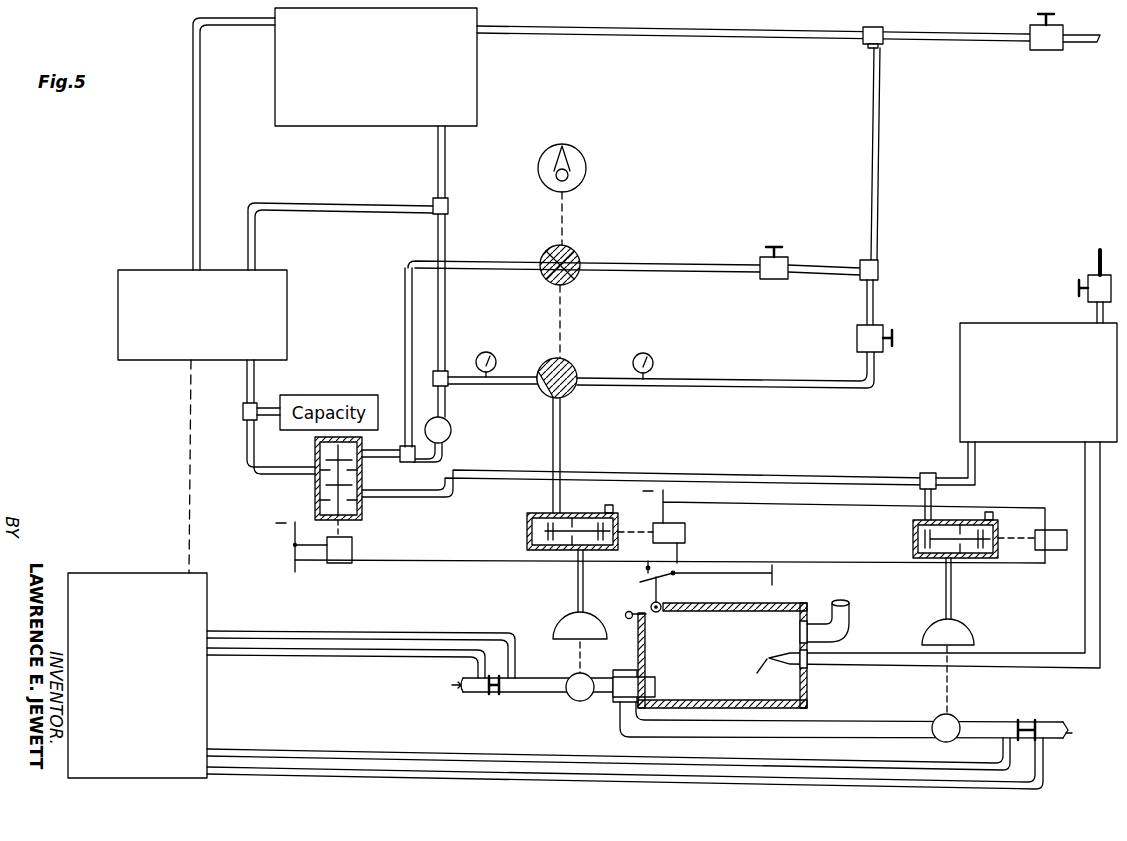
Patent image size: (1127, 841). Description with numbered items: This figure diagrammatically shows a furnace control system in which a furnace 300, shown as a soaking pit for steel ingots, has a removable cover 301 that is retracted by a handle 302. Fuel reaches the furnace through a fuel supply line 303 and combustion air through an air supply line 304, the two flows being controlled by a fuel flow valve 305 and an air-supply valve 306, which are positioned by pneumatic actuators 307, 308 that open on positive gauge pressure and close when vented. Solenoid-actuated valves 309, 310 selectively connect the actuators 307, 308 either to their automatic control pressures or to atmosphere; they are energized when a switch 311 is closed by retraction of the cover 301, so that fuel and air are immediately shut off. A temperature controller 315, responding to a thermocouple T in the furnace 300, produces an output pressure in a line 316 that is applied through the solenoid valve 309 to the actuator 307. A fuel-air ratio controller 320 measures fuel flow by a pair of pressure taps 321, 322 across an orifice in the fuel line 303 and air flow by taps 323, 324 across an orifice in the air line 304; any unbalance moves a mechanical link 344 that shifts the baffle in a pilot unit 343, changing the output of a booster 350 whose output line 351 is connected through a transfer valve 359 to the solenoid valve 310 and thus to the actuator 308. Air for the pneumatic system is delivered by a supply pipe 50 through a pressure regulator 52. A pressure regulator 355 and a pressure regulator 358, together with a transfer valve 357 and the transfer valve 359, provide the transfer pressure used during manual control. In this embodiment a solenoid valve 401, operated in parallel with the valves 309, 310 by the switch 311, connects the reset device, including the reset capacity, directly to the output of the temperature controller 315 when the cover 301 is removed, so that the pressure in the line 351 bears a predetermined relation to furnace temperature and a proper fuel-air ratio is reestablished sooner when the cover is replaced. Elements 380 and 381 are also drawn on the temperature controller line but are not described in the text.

The supply pipe 50 is at (1076, 44).
The pressure regulator 52 is at (1040, 50).
The furnace 300 is at (687, 652).
The cover 301 is at (806, 604).
The handle 302 is at (627, 611).
The fuel supply line 303 is at (859, 722).
The combustion air supply line 304 is at (598, 680).
The fuel flow valve 305 is at (961, 718).
The air-supply valve 306 is at (571, 701).
The pneumatic actuator 307 is at (964, 629).
The pneumatic actuator 308 is at (566, 622).
The solenoid-actuated valve 309 is at (999, 522).
The solenoid-actuated valve 310 is at (580, 512).
The switch 311 is at (715, 586).
The temperature controller 315 is at (1032, 323).
The output pressure line 316 is at (953, 478).
The fuel-air ratio controller 320 is at (207, 611).
The pressure tap 321 is at (828, 764).
The pressure tap 322 is at (1046, 760).
The pressure tap 323 is at (318, 657).
The pressure tap 324 is at (426, 630).
The pilot unit 343 is at (170, 268).
The mechanical link 344 is at (189, 488).
The booster 350 is at (478, 80).
The output line 351 is at (447, 318).
The pressure regulator 355 is at (788, 255).
The transfer valve 357 is at (578, 252).
The pressure regulator 358 is at (857, 334).
The transfer valve 359 is at (572, 362).
The valve handle 380 is at (1097, 256).
The valve 381 is at (1090, 284).
The solenoid valve 401 is at (362, 504).